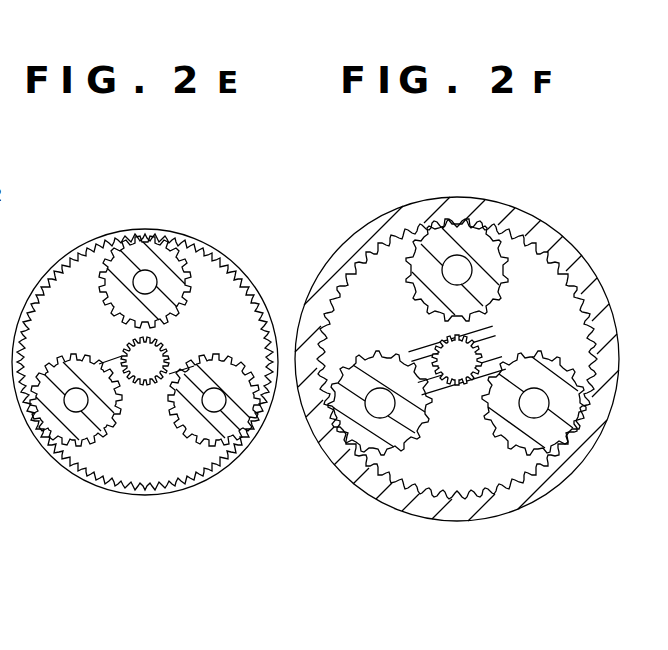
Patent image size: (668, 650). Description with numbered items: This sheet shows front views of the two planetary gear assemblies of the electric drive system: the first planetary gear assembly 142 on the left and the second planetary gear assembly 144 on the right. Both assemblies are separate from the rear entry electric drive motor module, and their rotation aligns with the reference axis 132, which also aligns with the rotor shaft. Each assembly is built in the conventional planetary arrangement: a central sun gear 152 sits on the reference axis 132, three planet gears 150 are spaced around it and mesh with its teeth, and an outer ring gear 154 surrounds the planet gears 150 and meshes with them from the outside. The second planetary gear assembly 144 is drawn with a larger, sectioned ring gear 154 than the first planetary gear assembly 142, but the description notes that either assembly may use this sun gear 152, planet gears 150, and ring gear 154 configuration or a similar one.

In FIG. 2E, the reference axis 132 is at (145, 361).
In FIG. 2F, the reference axis 132 is at (457, 360).
In FIG. 2E, the first planetary gear assembly 142 is at (242, 258).
In FIG. 2F, the second planetary gear assembly 144 is at (580, 245).
In FIG. 2E, the planet gears 150 is at (162, 238).
In FIG. 2F, the planet gears 150 is at (496, 238).
In FIG. 2E, the sun gear 152 is at (170, 343).
In FIG. 2F, the sun gear 152 is at (478, 340).
In FIG. 2E, the ring gear 154 is at (118, 232).
In FIG. 2F, the ring gear 154 is at (457, 205).